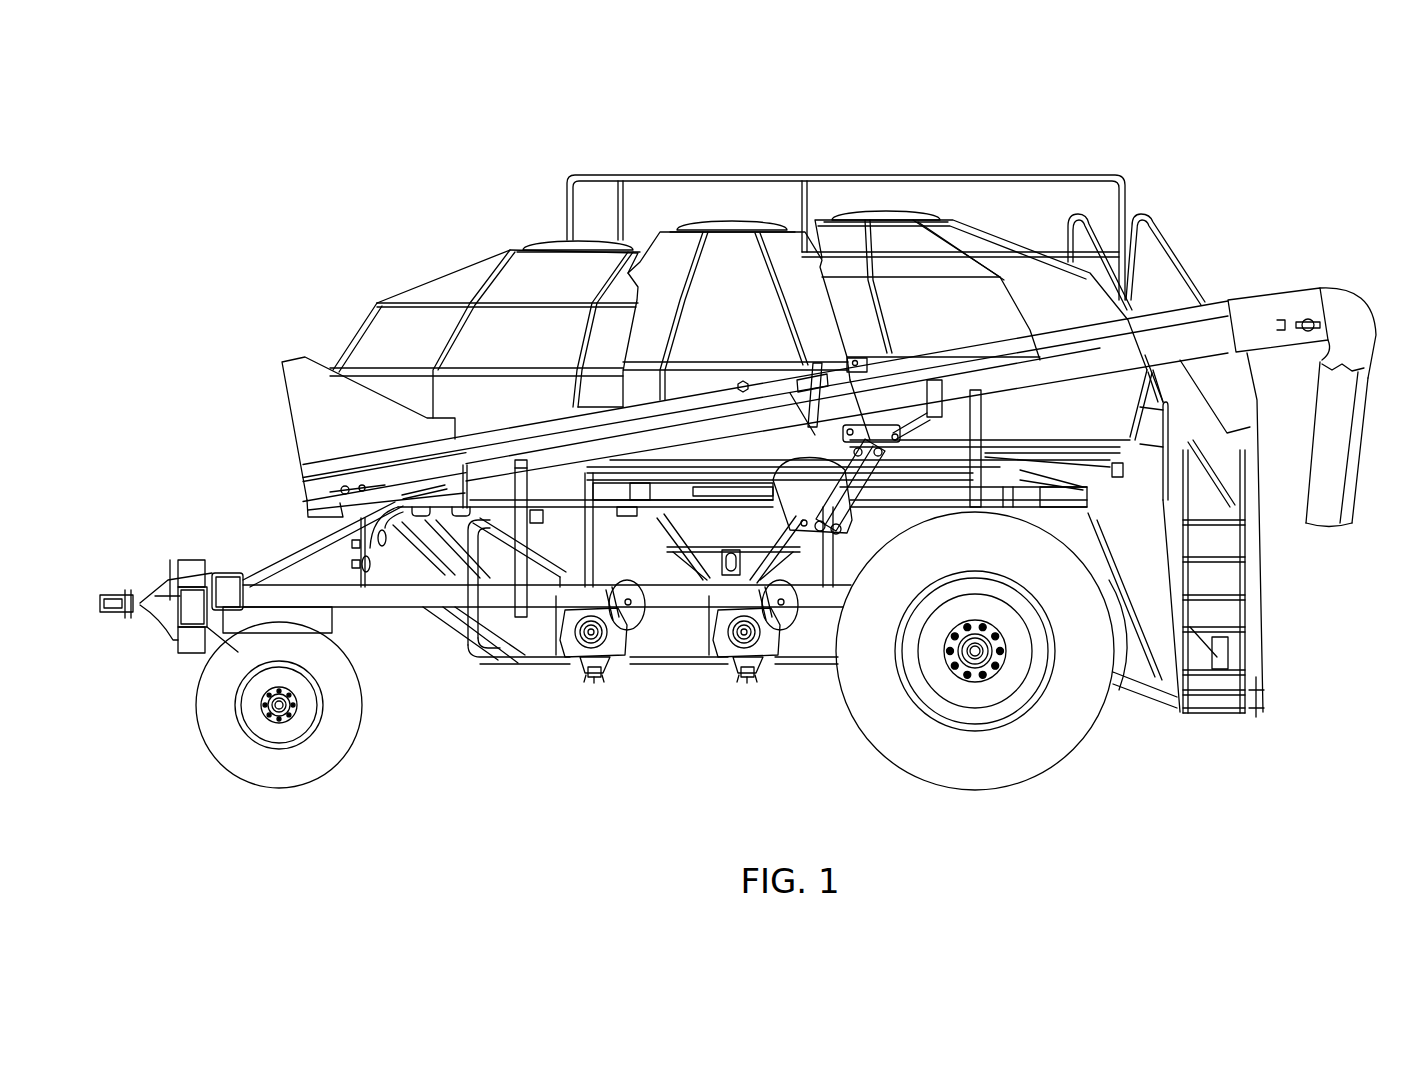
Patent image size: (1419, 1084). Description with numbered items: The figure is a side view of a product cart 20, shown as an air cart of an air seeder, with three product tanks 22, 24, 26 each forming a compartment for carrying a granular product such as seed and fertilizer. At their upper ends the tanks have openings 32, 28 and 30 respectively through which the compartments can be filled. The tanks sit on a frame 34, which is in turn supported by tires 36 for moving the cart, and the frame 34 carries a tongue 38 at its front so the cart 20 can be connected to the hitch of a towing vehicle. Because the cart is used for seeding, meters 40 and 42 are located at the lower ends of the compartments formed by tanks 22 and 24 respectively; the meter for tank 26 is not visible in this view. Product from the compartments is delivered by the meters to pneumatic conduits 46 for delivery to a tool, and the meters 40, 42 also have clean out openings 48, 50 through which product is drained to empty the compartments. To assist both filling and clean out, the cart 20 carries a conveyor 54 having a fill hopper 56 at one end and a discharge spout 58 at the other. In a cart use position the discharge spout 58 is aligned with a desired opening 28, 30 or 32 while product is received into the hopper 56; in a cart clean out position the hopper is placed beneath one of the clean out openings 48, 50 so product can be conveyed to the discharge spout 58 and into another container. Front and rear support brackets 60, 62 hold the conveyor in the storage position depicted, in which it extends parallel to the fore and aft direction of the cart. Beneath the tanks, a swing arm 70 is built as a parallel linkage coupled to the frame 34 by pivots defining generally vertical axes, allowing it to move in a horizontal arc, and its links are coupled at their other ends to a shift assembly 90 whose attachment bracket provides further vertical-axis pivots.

The product cart 20 is at (382, 272).
The product tank 22 is at (506, 348).
The product tank 24 is at (714, 320).
The product tank 26 is at (921, 323).
The opening 28 is at (552, 242).
The opening 30 is at (730, 218).
The opening 32 is at (895, 208).
The frame 34 is at (365, 608).
The tires 36 is at (321, 762).
The tongue 38 is at (153, 598).
The meter 40 is at (572, 645).
The meter 42 is at (726, 645).
The pneumatic conduits 46 is at (467, 617).
The clean out opening 48 is at (600, 678).
The clean out opening 50 is at (753, 678).
The conveyor 54 is at (1172, 314).
The fill hopper 56 is at (290, 421).
The discharge spout 58 is at (1320, 438).
The front support bracket 60 is at (517, 540).
The rear support bracket 62 is at (978, 425).
The swing arm 70 is at (683, 518).
The shift assembly 90 is at (865, 525).